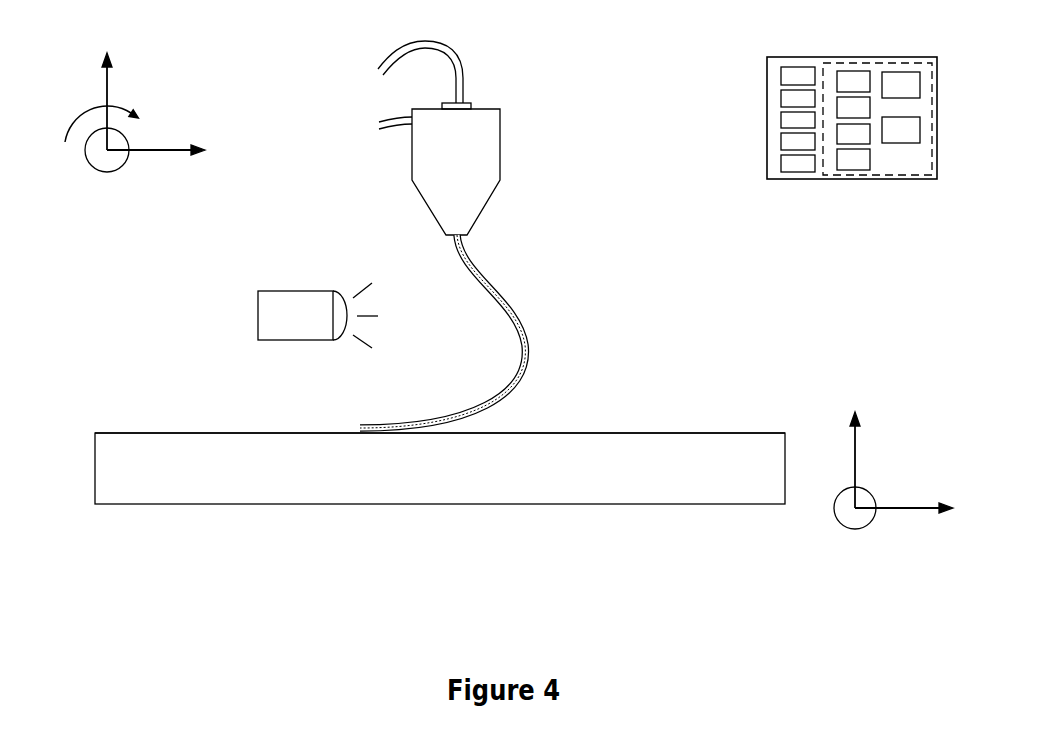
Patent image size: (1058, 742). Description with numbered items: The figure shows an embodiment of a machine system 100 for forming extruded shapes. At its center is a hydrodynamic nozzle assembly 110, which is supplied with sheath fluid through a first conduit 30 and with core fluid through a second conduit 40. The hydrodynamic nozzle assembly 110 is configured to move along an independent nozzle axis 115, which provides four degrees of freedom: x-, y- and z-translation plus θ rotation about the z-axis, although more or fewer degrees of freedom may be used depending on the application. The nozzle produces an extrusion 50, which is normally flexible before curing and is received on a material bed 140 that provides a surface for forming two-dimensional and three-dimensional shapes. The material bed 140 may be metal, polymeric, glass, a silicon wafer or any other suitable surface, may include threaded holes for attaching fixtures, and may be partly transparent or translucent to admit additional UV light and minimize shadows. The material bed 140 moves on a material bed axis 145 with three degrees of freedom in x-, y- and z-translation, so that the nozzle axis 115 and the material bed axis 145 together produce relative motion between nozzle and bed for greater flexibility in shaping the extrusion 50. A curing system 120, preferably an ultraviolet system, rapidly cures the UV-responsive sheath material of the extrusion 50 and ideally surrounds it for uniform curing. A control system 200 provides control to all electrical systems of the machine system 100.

The nozzle axis 115 is at (169, 76).
The first conduit 30 is at (462, 63).
The second conduit 40 is at (408, 120).
The hydrodynamic nozzle assembly 110 is at (501, 133).
The extrusion 50 is at (500, 300).
The curing system 120 is at (303, 290).
The machine system 100 is at (257, 523).
The material bed 140 is at (458, 481).
The material bed axis 145 is at (805, 534).
The control system 200 is at (873, 200).